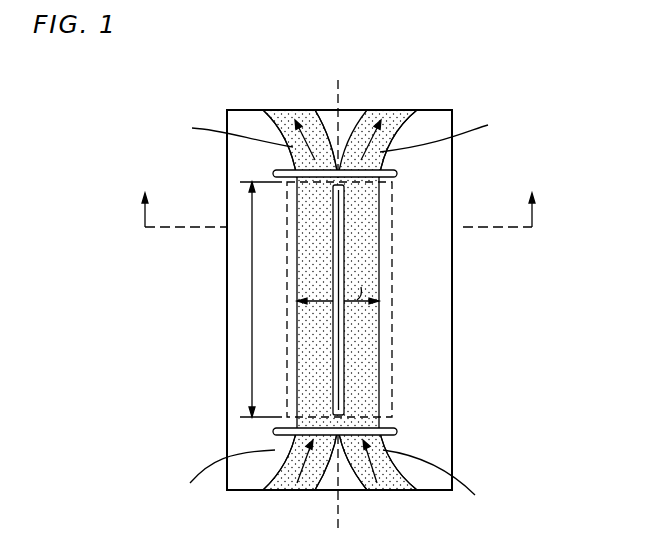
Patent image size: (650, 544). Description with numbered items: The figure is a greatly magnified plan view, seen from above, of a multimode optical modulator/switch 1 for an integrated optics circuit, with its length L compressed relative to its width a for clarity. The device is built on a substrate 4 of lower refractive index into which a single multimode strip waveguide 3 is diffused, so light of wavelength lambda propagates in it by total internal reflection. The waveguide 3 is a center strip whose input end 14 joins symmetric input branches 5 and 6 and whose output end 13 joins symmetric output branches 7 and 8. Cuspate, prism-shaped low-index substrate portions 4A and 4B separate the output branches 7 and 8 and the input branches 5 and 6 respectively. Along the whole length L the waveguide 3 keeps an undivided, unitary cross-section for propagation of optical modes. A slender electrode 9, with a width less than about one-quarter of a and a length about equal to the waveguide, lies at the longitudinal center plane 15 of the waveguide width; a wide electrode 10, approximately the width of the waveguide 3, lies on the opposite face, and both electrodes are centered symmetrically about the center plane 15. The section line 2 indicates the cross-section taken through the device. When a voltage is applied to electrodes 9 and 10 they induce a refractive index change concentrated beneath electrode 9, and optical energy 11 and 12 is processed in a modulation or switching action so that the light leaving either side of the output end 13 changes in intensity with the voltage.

The multimode modulator/switch 1 is at (393, 22).
The section line 2- 2 is at (337, 199).
The multimode optical strip waveguide 3 is at (372, 245).
The substrate 4 is at (437, 425).
The cuspate low-index substrate portion 4A is at (327, 112).
The cuspate low-index substrate portion 4B is at (326, 492).
The input branch 5 is at (276, 492).
The input branch 6 is at (395, 492).
The output branch 7 is at (281, 112).
The output branch 8 is at (397, 112).
The slender electrode 9 is at (342, 322).
The wide electrode 10 is at (392, 362).
The optical energy 11 is at (305, 493).
The optical energy 12 is at (362, 493).
The output end 13 is at (275, 172).
The input end 14 is at (275, 430).
The longitudinal center plane 15 is at (341, 86).